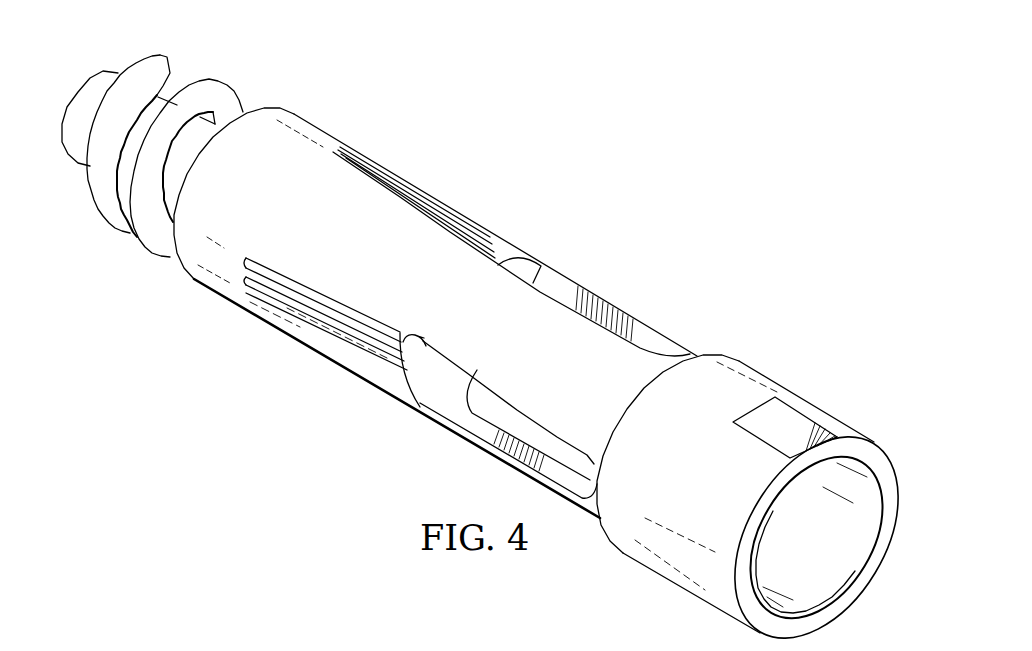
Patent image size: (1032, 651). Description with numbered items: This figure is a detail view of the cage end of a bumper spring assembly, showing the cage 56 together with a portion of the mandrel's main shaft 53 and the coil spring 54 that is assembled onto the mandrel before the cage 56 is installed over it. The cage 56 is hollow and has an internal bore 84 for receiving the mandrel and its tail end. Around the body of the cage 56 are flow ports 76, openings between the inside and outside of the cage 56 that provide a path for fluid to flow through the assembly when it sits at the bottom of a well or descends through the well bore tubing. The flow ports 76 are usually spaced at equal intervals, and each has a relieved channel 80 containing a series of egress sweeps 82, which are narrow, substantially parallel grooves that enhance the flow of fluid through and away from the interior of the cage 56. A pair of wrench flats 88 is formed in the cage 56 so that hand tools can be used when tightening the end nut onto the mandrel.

The main shaft 53 is at (105, 87).
The coil spring 54 is at (207, 101).
The cage 56 is at (302, 126).
The flow ports 76 is at (650, 338).
The relieved channel 80 is at (479, 226).
The egress sweeps 82 is at (384, 176).
The internal bore 84 is at (828, 553).
The wrench flats 88 is at (786, 408).